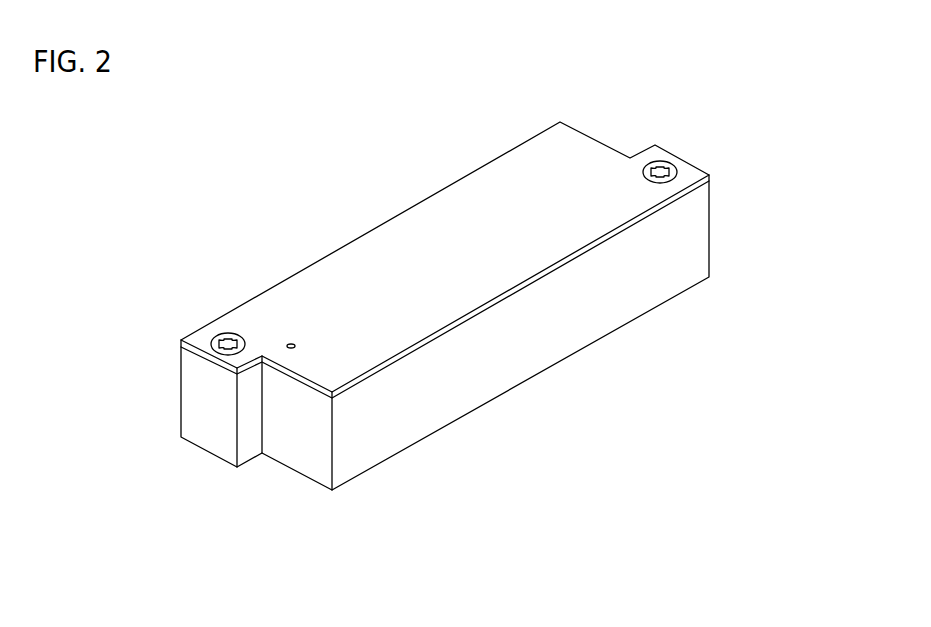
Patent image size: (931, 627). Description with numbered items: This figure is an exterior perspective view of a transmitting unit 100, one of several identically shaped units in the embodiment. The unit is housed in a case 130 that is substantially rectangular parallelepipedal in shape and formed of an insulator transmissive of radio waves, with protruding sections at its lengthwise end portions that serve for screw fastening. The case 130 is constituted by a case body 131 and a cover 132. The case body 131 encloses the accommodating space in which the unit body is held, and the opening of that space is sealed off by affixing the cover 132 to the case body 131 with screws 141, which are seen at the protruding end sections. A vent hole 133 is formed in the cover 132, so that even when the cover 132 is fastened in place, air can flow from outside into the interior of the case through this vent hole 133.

The transmitting unit 100 is at (289, 161).
The case 130 is at (497, 175).
The case body 131 is at (503, 375).
The cover 132 is at (327, 268).
The vent hole 133 is at (290, 343).
The screws 141 is at (212, 343).